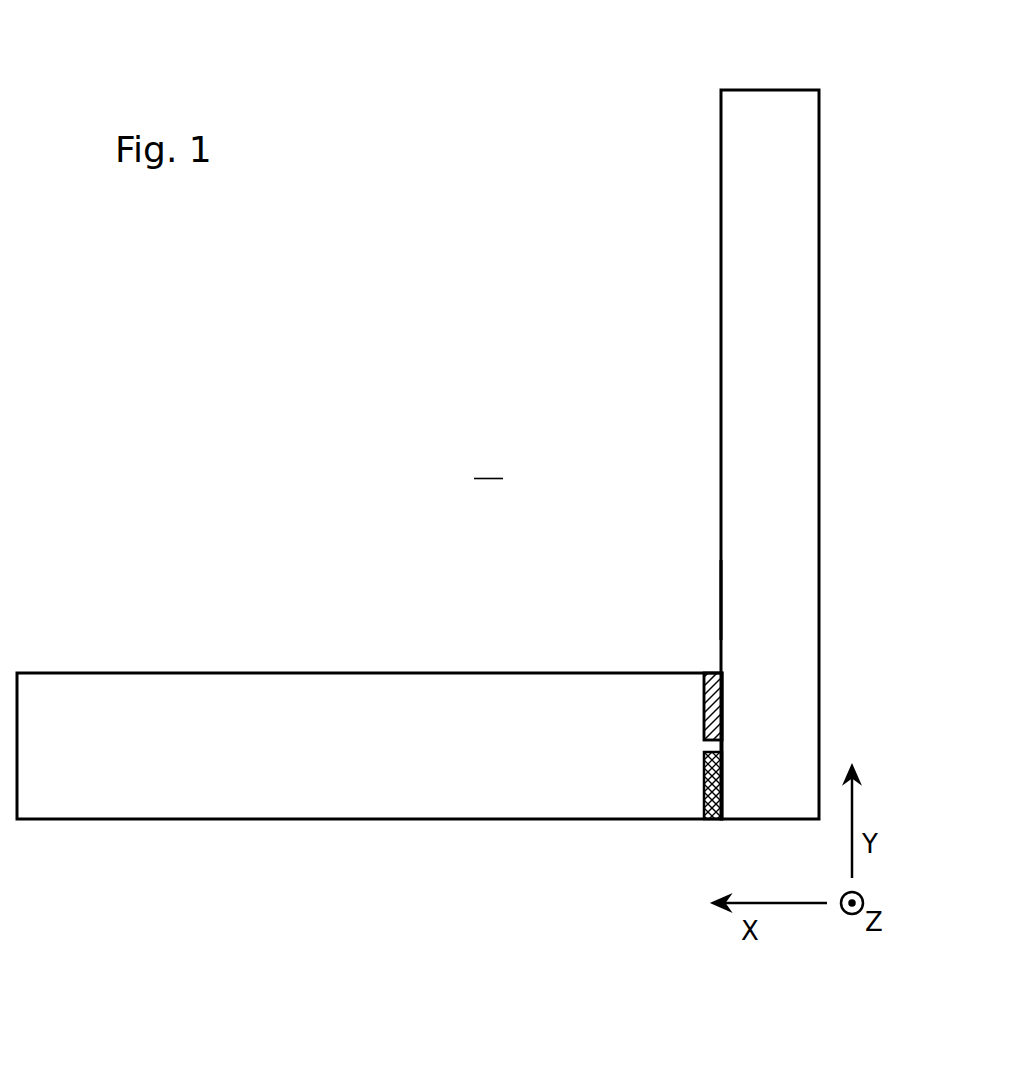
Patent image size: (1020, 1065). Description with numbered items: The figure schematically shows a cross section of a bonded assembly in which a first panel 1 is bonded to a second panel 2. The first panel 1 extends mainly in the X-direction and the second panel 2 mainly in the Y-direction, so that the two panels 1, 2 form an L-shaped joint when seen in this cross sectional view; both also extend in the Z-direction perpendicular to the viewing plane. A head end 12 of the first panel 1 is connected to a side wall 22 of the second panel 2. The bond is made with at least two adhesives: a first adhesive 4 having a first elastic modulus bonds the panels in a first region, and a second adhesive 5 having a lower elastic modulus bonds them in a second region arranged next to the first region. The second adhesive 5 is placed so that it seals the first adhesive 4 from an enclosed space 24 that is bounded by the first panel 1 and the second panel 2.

The first panel 1 is at (162, 700).
The second panel 2 is at (772, 117).
The side wall 22 is at (722, 600).
The enclosed space 24 is at (489, 467).
The second adhesive 5 is at (704, 693).
The head end 12 is at (703, 732).
The first adhesive 4 is at (705, 790).